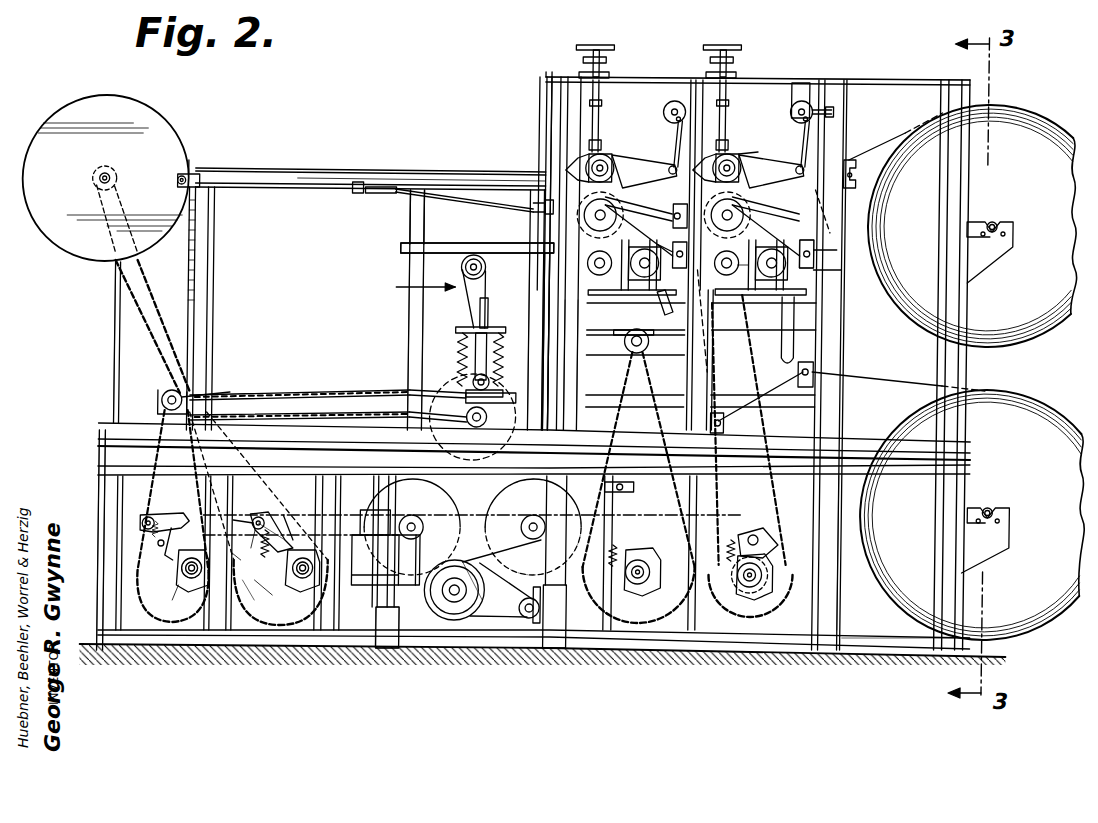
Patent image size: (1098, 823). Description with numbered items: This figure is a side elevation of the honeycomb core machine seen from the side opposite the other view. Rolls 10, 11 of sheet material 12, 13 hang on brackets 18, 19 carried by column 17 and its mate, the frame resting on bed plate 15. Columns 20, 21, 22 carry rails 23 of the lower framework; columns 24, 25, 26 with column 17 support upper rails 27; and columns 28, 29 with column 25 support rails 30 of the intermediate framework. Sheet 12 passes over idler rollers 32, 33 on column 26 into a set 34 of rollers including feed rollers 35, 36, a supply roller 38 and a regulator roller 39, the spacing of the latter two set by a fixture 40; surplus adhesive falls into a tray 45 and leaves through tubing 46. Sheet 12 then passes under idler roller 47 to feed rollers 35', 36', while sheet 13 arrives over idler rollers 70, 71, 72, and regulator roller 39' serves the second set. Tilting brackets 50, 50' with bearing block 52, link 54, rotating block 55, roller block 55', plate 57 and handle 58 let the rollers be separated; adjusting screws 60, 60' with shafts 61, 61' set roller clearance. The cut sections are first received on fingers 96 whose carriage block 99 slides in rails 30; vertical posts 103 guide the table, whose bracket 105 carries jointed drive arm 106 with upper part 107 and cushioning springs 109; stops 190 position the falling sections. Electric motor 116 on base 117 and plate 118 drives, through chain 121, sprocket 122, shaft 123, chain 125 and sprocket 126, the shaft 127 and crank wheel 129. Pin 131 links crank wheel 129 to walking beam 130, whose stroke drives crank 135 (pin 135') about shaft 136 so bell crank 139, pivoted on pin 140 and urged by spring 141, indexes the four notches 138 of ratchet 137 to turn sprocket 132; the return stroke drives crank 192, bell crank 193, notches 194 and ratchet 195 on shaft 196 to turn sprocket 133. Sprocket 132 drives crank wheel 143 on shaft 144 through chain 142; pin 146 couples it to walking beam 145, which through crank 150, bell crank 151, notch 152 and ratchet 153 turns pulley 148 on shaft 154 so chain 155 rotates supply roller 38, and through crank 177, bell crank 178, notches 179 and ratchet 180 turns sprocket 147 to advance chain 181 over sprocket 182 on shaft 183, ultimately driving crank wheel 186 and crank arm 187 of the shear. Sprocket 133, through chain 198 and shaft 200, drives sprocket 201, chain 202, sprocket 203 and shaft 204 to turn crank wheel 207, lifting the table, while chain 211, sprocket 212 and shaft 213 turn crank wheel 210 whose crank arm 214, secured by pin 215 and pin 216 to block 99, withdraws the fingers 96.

The roll 10 is at (1033, 118).
The roll 11 is at (1025, 405).
The sheet material 12 is at (878, 150).
The sheet material 13 is at (904, 378).
The bed plate 15 is at (880, 640).
The column 17 is at (948, 505).
The bracket 18 is at (993, 262).
The bracket 19 is at (1000, 546).
The column 20 is at (842, 596).
The column 21 is at (104, 487).
The column 22 is at (404, 617).
The rail 23 is at (172, 462).
The column 24 is at (712, 376).
The column 25 is at (573, 403).
The column 26 is at (862, 303).
The upper rail 27 is at (888, 80).
The column 28 is at (119, 337).
The column 29 is at (218, 268).
The rail 30 is at (275, 170).
The idler roller 32 is at (852, 188).
The idler roller 33 is at (831, 253).
The set of rollers 34 is at (745, 228).
The feed roller 35 is at (726, 147).
The feed roller 35' is at (602, 154).
The feed roller 36 is at (735, 215).
The feed roller 36' is at (614, 208).
The supply roller 38 is at (612, 246).
The regulator roller 39 is at (800, 272).
The regulator roller 39' is at (657, 309).
The fixture 40 is at (626, 288).
The tray 45 is at (760, 300).
The tubing 46 is at (786, 350).
The idler roller 47 is at (678, 210).
The tilting bracket 50 is at (772, 166).
The tilting bracket 50' is at (645, 160).
The bearing block 52 is at (742, 152).
The link 54 is at (803, 122).
The rotating block 55 is at (782, 107).
The roller block 55' is at (649, 128).
The plate 57 is at (806, 82).
The handle 58 is at (836, 111).
The adjusting screw 60 is at (731, 52).
The adjusting screw 60' is at (607, 50).
The shaft 61 is at (734, 116).
The shaft 61' is at (609, 116).
The idler roller 70 is at (808, 387).
The idler roller 71 is at (740, 404).
The idler roller 72 is at (672, 266).
The fingers 96 is at (475, 199).
The block 99 is at (460, 170).
The vertical post 103 is at (413, 318).
The bracket 105 is at (466, 272).
The jointed drive arm 106 is at (452, 269).
The upper part 107 is at (484, 306).
The spring 109 is at (468, 348).
The electric motor 116 is at (462, 620).
The base 117 is at (500, 620).
The plate 118 is at (418, 620).
The chain 121 is at (538, 620).
The sprocket 122 is at (520, 570).
The shaft 123 is at (546, 612).
The chain 125 is at (512, 566).
The sprocket 126 is at (420, 549).
The shaft 127 is at (406, 527).
The crank wheel 129 is at (398, 483).
The walking beam 130 is at (244, 524).
The pin 131 is at (384, 510).
The sprocket 132 is at (316, 612).
The sprocket 133 is at (165, 592).
The crank 135 is at (272, 509).
The pin 135' is at (272, 518).
The shaft 136 is at (278, 590).
The ratchet 137 is at (244, 605).
The notch 138 is at (262, 590).
The bell crank 139 is at (297, 520).
The pin 140 is at (285, 530).
The spring 141 is at (182, 508).
The chain 142 is at (296, 580).
The crank wheel 143 is at (500, 490).
The shaft 144 is at (542, 515).
The walking beam 145 is at (652, 484).
The pin 146 is at (496, 500).
The sprocket 147 is at (655, 618).
The pulley 148 is at (740, 540).
The crank 150 is at (716, 484).
The bell crank 151 is at (688, 596).
The notch 152 is at (770, 518).
The ratchet 153 is at (752, 598).
The shaft 154 is at (764, 588).
The chain 155 is at (760, 422).
The crank 177 is at (558, 512).
The bell crank 178 is at (630, 545).
The notch 179 is at (648, 584).
The ratchet 180 is at (622, 583).
The chain 181 is at (670, 426).
The sprocket 182 is at (622, 380).
The shaft 183 is at (629, 341).
The crank wheel 186 is at (548, 294).
The crank arm 187 is at (548, 117).
The stop 190 is at (427, 228).
The crank 192 is at (168, 480).
The bell crank 193 is at (200, 590).
The notch 194 is at (205, 600).
The ratchet 195 is at (185, 605).
The shaft 196 is at (240, 562).
The chain 198 is at (104, 466).
The shaft 200 is at (165, 400).
The sprocket 201 is at (195, 396).
The chain 202 is at (284, 393).
The sprocket 203 is at (452, 385).
The shaft 204 is at (440, 412).
The crank wheel 207 is at (425, 393).
The crank wheel 210 is at (132, 108).
The chain 211 is at (128, 309).
The sprocket 212 is at (96, 189).
The shaft 213 is at (103, 170).
The crank arm 214 is at (197, 168).
The pin 215 is at (178, 178).
The pin 216 is at (360, 193).